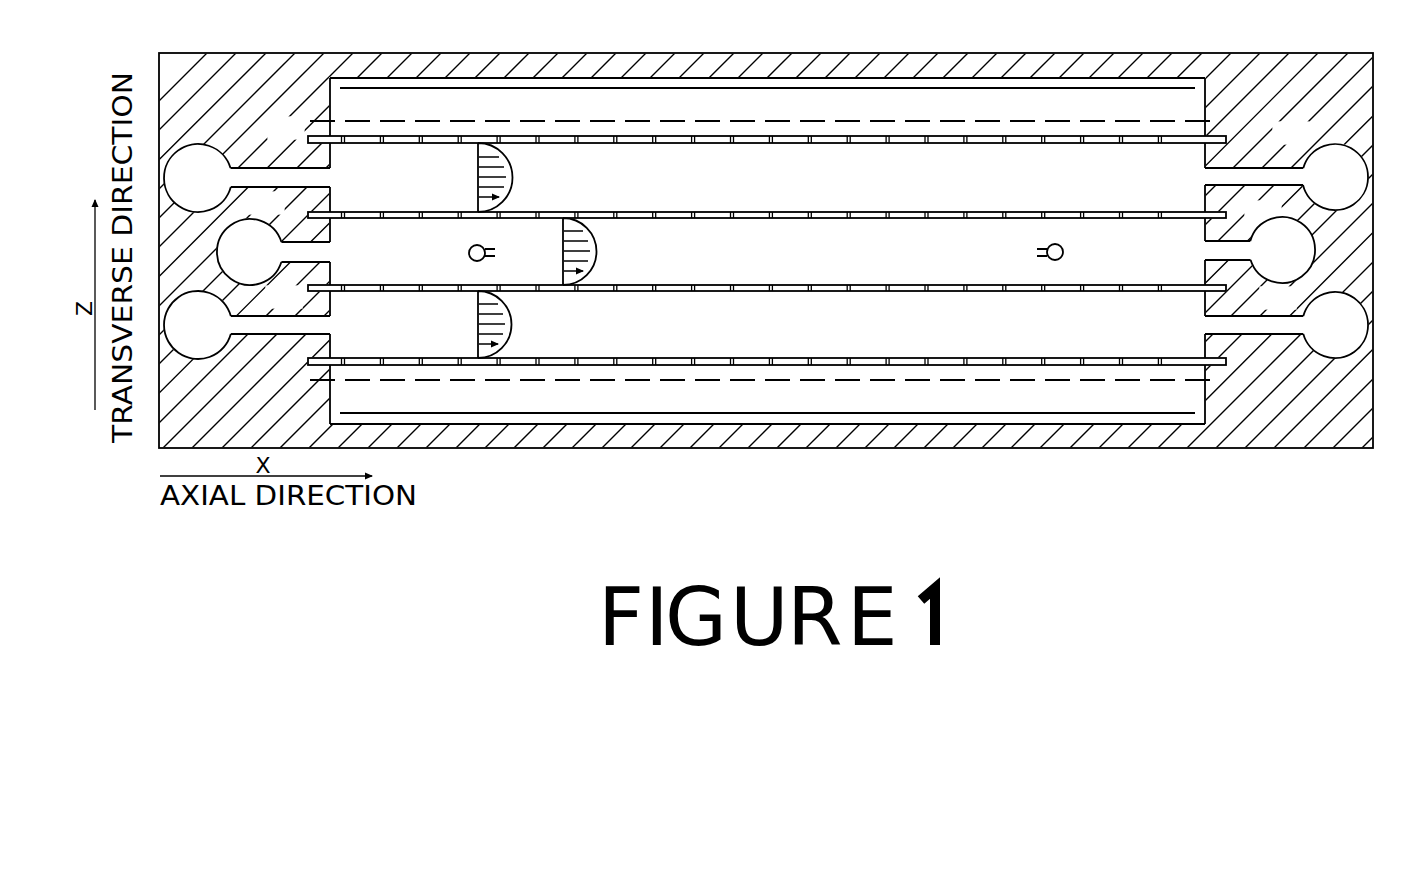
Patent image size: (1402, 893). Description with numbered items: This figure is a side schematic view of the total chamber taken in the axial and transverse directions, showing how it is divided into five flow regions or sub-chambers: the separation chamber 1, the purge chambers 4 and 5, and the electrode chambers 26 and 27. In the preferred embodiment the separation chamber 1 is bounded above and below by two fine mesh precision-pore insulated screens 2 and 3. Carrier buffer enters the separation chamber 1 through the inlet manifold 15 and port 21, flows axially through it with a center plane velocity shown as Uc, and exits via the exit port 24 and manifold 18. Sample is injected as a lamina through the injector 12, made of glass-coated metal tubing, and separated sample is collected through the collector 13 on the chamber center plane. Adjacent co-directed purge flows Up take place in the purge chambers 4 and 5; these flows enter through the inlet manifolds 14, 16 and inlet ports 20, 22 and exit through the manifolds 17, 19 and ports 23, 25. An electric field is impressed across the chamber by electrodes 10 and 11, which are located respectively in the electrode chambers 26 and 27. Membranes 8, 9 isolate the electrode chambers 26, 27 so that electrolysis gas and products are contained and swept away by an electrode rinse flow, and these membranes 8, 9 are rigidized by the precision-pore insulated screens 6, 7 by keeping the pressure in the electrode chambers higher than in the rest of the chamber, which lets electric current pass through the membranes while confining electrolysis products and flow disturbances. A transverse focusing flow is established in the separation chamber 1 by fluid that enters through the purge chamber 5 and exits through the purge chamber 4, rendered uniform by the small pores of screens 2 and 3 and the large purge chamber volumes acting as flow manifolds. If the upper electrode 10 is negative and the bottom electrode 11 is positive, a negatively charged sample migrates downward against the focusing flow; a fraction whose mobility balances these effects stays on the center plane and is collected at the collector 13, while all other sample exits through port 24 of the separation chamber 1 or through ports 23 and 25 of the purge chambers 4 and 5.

The separation chamber 1 is at (758, 265).
The fine mesh precision-pore insulated screen 2 is at (862, 218).
The fine mesh precision-pore insulated screen 3 is at (917, 284).
The purge chamber 4 is at (758, 190).
The purge chamber 5 is at (758, 343).
The precision-pore insulated screen 6 is at (938, 143).
The precision-pore insulated screen 7 is at (908, 357).
The membrane 8 is at (895, 120).
The membrane 9 is at (942, 380).
The electrode 10 is at (1043, 88).
The electrode 11 is at (850, 412).
The injector 12 is at (470, 247).
The collector 13 is at (1063, 246).
The inlet manifold 14 is at (197, 178).
The inlet manifold 15 is at (249, 252).
The inlet manifold 16 is at (197, 325).
The manifold 17 is at (1335, 177).
The manifold 18 is at (1282, 250).
The manifold 19 is at (1335, 325).
The inlet port 20 is at (245, 167).
The port 21 is at (312, 240).
The inlet port 22 is at (255, 313).
The port 23 is at (1248, 157).
The exit port 24 is at (1225, 232).
The port 25 is at (1247, 313).
The electrode chamber 26 is at (750, 116).
The electrode chamber 27 is at (755, 408).